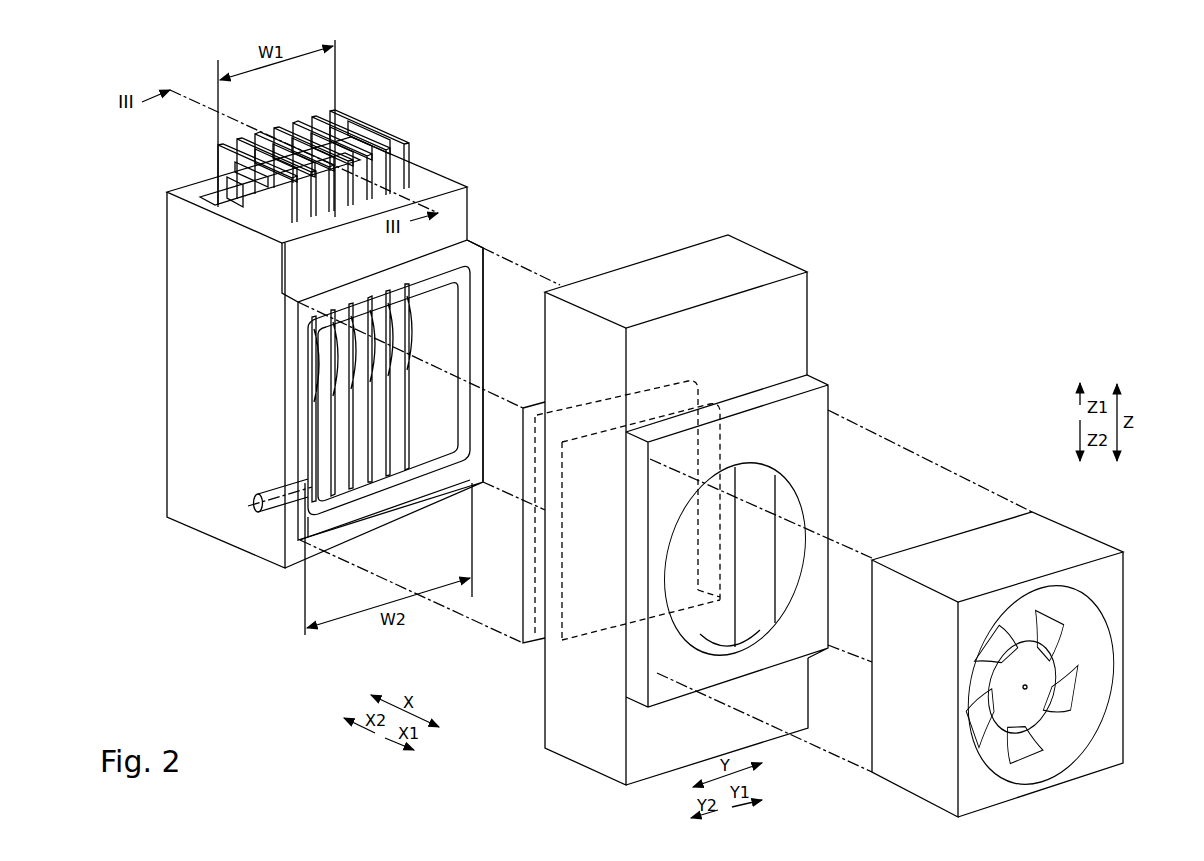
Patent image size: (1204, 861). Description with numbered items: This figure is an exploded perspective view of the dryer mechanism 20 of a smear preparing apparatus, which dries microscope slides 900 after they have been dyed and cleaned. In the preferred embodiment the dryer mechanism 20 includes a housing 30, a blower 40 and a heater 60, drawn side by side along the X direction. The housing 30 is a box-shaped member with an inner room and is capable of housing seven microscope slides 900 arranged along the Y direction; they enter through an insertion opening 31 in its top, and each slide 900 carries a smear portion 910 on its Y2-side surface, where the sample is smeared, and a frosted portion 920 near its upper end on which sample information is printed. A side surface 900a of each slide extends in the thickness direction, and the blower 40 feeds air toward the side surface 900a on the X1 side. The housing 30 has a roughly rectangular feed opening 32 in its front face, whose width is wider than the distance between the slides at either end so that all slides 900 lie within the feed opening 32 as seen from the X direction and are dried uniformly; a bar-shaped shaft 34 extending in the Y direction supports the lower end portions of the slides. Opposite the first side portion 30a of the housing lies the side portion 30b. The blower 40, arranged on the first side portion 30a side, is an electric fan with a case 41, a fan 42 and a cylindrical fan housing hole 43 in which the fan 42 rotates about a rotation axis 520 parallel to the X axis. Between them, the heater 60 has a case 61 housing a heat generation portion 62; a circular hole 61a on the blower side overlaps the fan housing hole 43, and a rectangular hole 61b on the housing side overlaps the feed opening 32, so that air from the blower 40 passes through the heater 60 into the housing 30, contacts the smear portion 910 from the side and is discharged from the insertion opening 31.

The dryer mechanism 20 is at (888, 162).
The housing 30 is at (455, 150).
The first side portion 30a is at (462, 227).
The case side wall 30b is at (168, 377).
The insertion opening 31 is at (413, 163).
The feed opening 32 is at (380, 495).
The shaft 34 is at (405, 460).
The blower 40 is at (1092, 522).
The case 41 is at (1110, 578).
The fan 42 is at (1045, 682).
The fan housing hole 43 is at (1097, 643).
The heater 60 is at (782, 243).
The case 61 is at (795, 315).
The hole 61a is at (713, 630).
The hole 61b is at (622, 617).
The heat generation portion 62 is at (753, 575).
The rotation axis 520 is at (1027, 688).
The microscope slide 900 is at (275, 123).
The side surface 900a is at (303, 160).
The smear portion 910 is at (392, 320).
The frosted portion 920 is at (242, 172).